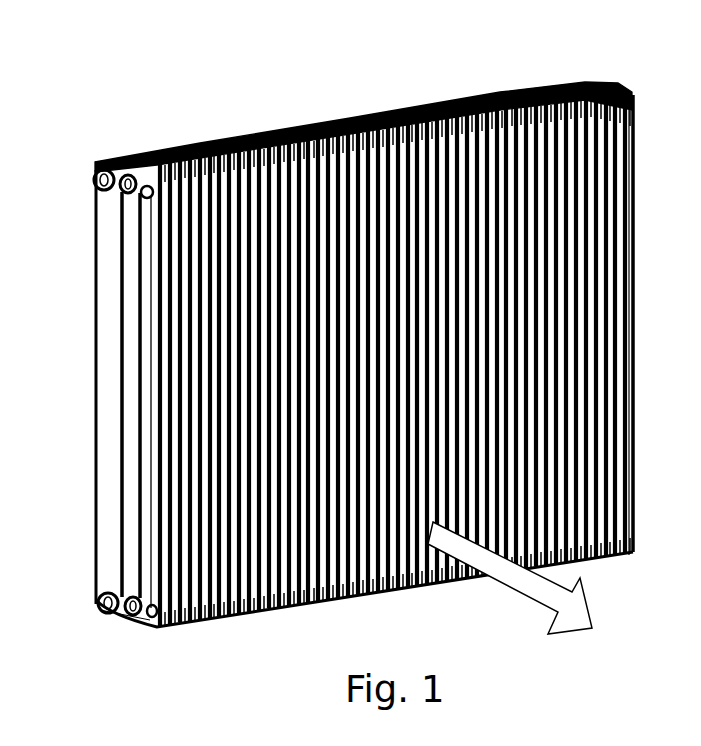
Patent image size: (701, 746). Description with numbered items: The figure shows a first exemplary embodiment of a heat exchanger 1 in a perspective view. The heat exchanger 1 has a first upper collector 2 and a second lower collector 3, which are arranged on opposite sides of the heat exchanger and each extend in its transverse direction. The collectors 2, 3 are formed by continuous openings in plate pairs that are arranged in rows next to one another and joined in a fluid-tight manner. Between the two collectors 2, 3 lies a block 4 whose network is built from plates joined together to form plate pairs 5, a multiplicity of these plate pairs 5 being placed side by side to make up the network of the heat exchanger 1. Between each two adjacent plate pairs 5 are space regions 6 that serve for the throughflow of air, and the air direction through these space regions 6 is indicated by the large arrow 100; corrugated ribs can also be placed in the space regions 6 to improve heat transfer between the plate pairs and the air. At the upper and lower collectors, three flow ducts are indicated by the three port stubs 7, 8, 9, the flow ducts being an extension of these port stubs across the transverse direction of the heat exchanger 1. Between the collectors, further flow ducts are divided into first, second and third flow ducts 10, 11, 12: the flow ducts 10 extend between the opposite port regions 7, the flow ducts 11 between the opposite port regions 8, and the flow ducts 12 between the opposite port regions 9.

The heat exchanger 1 is at (481, 84).
The first upper collector 2 is at (100, 156).
The second lower collector 3 is at (141, 632).
The block 4 is at (152, 441).
The plate pairs 5 is at (633, 230).
The space regions 6 is at (633, 142).
The port stub 7 is at (95, 184).
The port stub 8 is at (125, 176).
The port stub 9 is at (150, 185).
The first flow ducts 10 is at (103, 242).
The second flow ducts 11 is at (127, 296).
The third flow ducts 12 is at (147, 307).
The air direction 100 is at (510, 578).